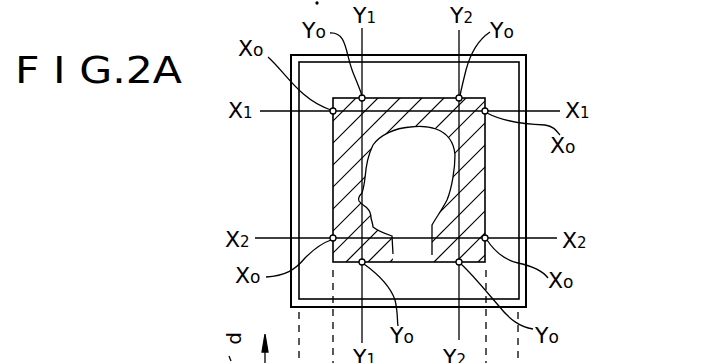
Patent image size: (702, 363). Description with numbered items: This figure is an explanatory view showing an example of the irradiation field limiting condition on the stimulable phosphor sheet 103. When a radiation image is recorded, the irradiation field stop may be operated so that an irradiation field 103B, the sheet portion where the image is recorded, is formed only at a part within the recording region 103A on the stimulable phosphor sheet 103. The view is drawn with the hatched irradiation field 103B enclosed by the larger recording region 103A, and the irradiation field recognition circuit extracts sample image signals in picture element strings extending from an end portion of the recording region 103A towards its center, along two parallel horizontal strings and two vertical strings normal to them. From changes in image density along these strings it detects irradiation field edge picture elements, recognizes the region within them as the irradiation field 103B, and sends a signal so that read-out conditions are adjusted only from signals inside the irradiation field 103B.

The stimulable phosphor sheet 103 is at (537, 48).
The recording region 103A is at (525, 78).
The irradiation field 103B is at (484, 199).